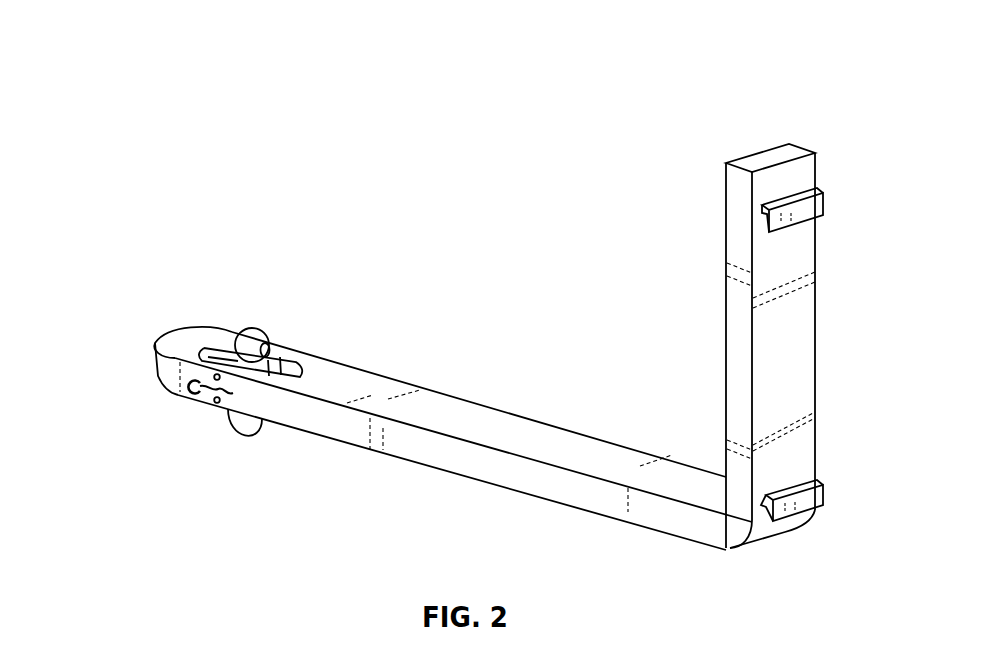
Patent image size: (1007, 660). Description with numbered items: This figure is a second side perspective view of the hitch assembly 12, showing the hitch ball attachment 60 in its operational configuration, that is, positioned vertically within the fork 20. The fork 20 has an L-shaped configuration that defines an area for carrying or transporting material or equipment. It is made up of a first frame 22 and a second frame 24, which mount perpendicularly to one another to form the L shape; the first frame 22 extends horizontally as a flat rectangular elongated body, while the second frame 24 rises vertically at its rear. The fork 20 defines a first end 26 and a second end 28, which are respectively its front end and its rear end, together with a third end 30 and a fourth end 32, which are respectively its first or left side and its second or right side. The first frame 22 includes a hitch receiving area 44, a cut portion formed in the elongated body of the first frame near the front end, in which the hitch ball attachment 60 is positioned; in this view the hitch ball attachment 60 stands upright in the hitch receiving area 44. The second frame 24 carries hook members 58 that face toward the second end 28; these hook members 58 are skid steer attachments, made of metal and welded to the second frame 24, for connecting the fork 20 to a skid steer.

The hitch assembly 12 is at (147, 100).
The fork 20 is at (585, 437).
The first frame 22 is at (535, 496).
The second frame 24 is at (800, 330).
The first end 26 is at (143, 328).
The second end 28 is at (838, 548).
The third end 30 is at (557, 312).
The fourth end 32 is at (383, 493).
The hitch receiving area 44 is at (288, 358).
The hook members 58 is at (805, 210).
The hitch ball attachment 60 is at (256, 330).